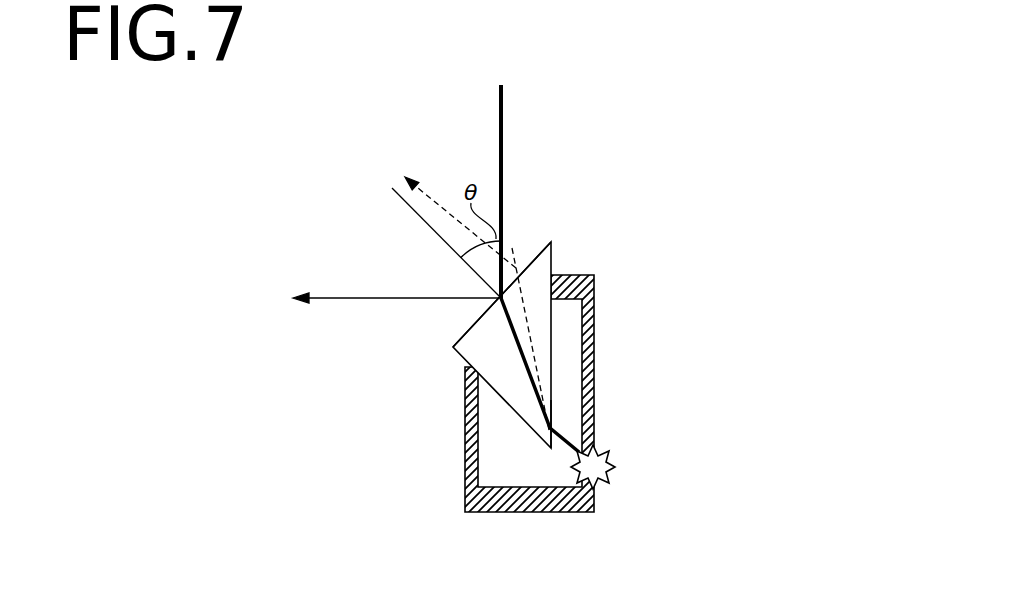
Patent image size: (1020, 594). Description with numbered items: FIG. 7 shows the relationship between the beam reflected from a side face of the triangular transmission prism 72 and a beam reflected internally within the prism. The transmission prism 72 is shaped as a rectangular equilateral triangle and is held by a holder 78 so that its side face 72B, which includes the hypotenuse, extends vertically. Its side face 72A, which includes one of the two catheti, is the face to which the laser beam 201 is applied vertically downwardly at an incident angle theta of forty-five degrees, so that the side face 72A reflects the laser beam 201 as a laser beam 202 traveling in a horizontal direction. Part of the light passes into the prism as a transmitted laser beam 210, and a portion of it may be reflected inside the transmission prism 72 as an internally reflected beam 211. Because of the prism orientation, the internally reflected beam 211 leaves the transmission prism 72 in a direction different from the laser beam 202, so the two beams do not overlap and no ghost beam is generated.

The transmission prism 72 is at (553, 257).
The side face 72A is at (466, 331).
The side face 72B is at (552, 392).
The holder 78 is at (594, 352).
The laser beam 201 is at (503, 115).
The laser beam 202 is at (327, 298).
The transmitted laser beam 210 is at (550, 386).
The internally reflected beam 211 is at (436, 195).